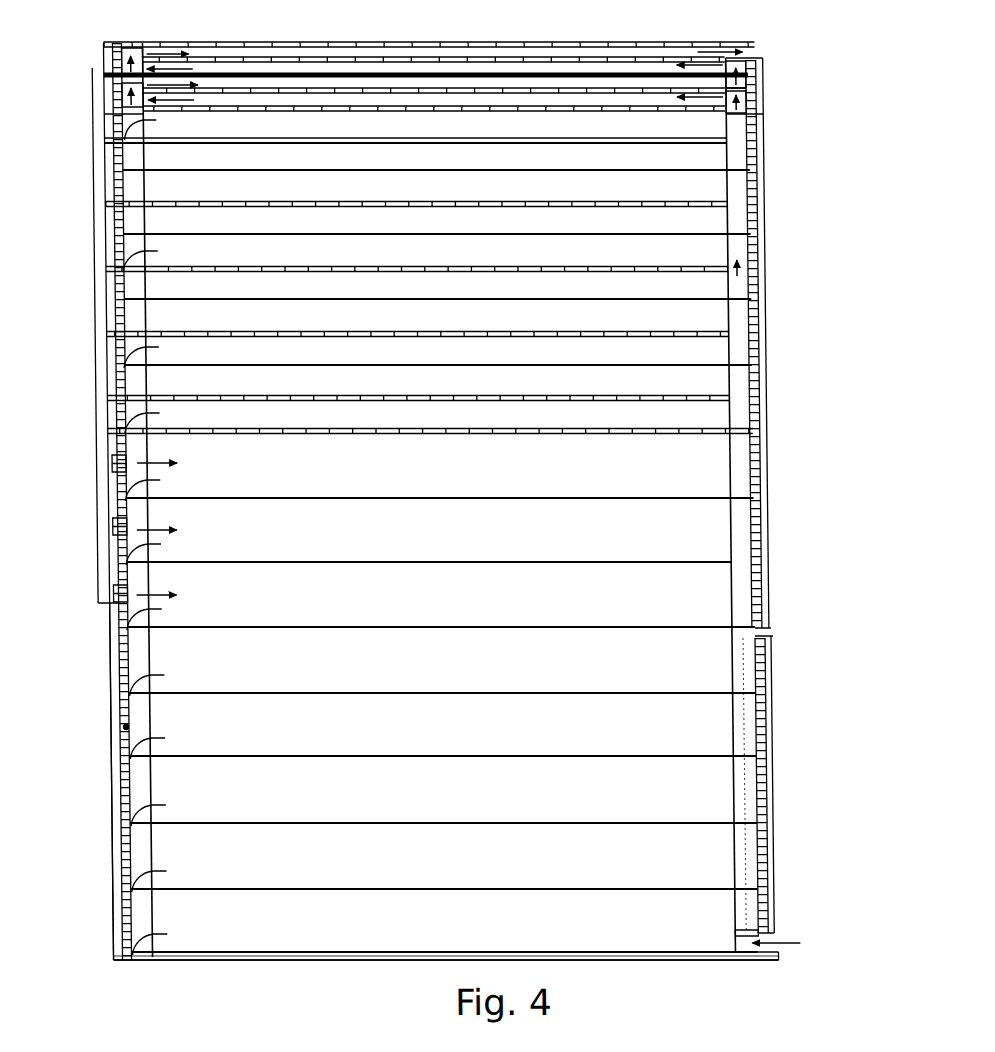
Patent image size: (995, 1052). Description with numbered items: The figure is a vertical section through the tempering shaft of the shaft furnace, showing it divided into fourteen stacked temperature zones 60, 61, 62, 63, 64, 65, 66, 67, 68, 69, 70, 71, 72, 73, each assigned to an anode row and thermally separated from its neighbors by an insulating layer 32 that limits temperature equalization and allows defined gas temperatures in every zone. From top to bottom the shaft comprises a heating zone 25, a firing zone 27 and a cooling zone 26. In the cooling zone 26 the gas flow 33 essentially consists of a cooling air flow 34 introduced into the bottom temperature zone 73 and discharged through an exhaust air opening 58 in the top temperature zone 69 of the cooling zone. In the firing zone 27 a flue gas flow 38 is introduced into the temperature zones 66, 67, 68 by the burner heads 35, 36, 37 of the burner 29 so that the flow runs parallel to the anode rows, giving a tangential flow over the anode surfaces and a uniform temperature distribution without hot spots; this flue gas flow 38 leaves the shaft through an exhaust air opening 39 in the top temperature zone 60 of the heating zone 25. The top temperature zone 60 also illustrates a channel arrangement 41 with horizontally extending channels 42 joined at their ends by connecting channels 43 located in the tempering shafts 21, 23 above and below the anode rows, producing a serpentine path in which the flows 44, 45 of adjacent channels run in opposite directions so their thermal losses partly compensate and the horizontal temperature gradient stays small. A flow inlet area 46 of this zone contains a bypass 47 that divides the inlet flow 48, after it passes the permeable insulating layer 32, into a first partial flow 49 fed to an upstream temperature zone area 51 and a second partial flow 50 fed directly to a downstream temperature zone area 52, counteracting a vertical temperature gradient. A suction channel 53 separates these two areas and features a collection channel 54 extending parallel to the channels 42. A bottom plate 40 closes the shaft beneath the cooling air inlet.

The tempering shaft 21 is at (118, 727).
The tempering shaft 23 is at (736, 670).
The heating zone 25 is at (782, 60).
The cooling zone 26 is at (778, 634).
The firing zone 27 is at (780, 432).
The burner 29 is at (102, 460).
The insulating layer 32 is at (580, 200).
The gas flow 33 is at (743, 266).
The cooling air flow 34 is at (775, 938).
The burner head 35 is at (84, 530).
The burner head 36 is at (105, 537).
The burner head 37 is at (108, 591).
The flue gas flow 38 is at (152, 462).
The exhaust air opening 39 is at (756, 48).
The bottom plate 40 is at (767, 955).
The channel arrangement 41 is at (466, 47).
The horizontally extending channel 42 is at (552, 44).
The connecting channel 43 is at (135, 54).
The flow 44 is at (187, 55).
The flow 45 is at (193, 61).
The flow inlet area 46 is at (749, 80).
The bypass 47 is at (749, 78).
The inlet flow 48 is at (752, 109).
The first partial flow 49 is at (745, 113).
The second partial flow 50 is at (764, 108).
The upstream temperature zone area 51 is at (90, 83).
The downstream temperature zone area 52 is at (90, 50).
The suction channel 53 is at (398, 73).
The collection channel 54 is at (357, 72).
The exhaust air opening 58 is at (765, 630).
The temperature zone 60 is at (110, 124).
The temperature zone 61 is at (113, 148).
The temperature zone 62 is at (90, 171).
The temperature zone 63 is at (115, 275).
The temperature zone 64 is at (115, 376).
The temperature zone 65 is at (113, 450).
The temperature zone 66 is at (111, 532).
The temperature zone 67 is at (112, 617).
The temperature zone 68 is at (105, 683).
The temperature zone 69 is at (110, 748).
The temperature zone 70 is at (111, 806).
The temperature zone 71 is at (111, 869).
The temperature zone 72 is at (111, 936).
The temperature zone 73 is at (120, 962).